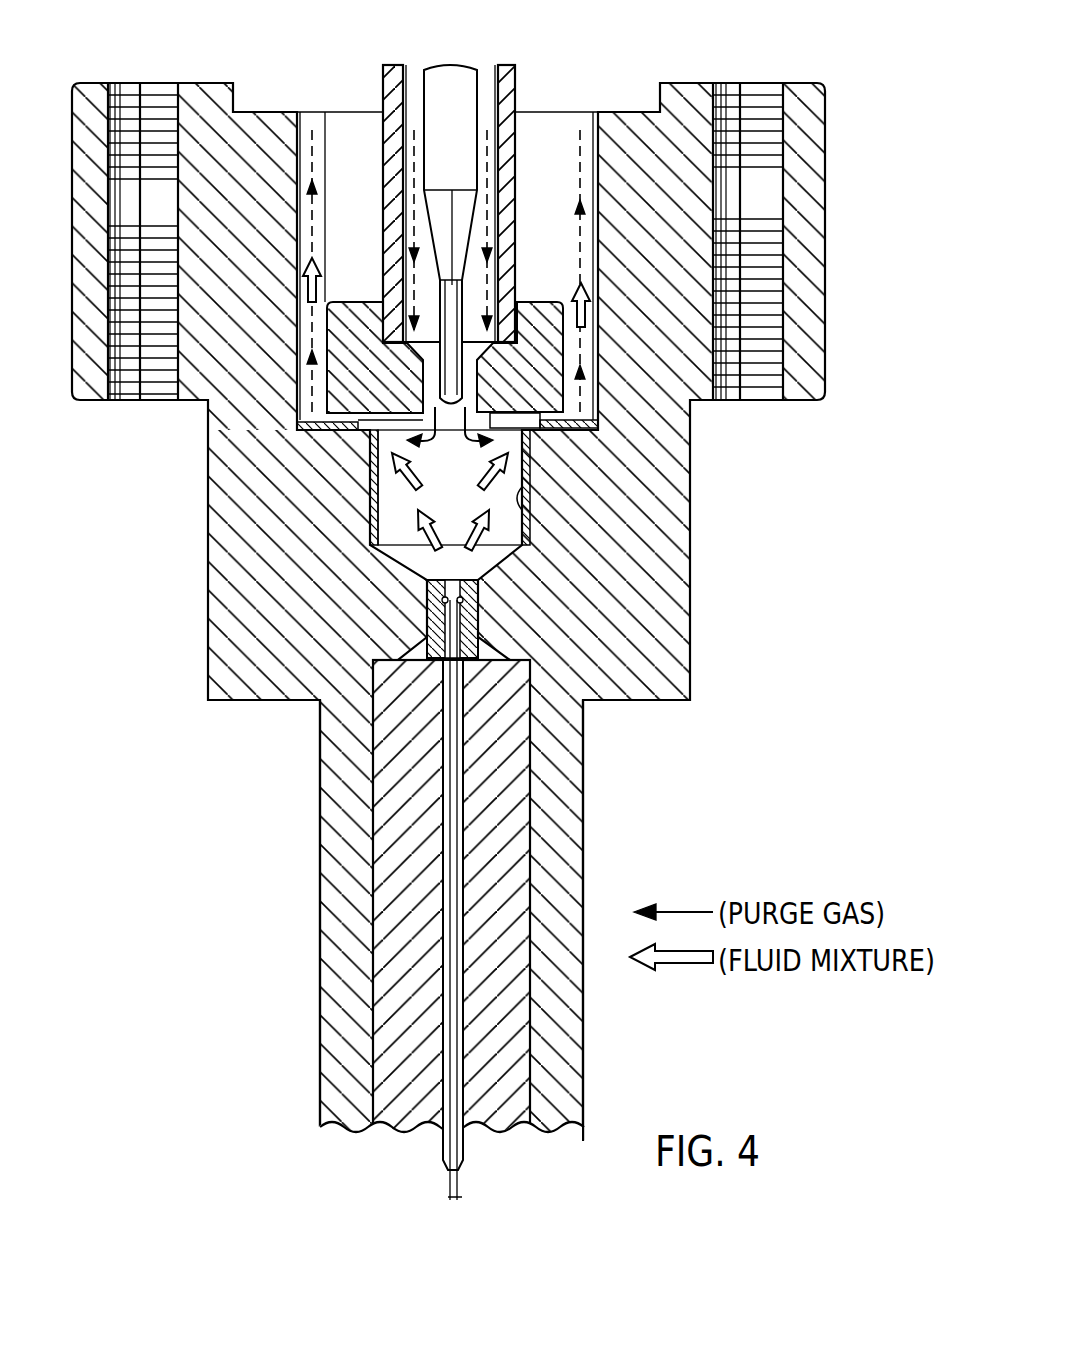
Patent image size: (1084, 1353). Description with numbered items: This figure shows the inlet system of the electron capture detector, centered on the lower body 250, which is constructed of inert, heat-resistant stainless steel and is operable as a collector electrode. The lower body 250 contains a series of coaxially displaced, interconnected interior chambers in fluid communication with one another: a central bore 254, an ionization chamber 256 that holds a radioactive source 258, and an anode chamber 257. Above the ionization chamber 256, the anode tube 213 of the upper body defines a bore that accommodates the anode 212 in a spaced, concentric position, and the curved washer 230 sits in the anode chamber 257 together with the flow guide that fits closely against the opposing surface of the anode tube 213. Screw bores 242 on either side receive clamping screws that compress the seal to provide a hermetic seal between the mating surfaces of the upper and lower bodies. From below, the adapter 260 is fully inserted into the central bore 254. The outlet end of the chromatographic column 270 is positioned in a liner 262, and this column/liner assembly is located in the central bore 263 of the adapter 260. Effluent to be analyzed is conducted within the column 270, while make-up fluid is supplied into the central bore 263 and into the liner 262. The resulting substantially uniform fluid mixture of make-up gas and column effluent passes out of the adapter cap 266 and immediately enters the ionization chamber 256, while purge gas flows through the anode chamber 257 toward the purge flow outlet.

The anode 212 is at (442, 70).
The anode tube 213 is at (516, 96).
The curved washer 230 is at (600, 432).
The screw bores 242 is at (178, 202).
The lower body 250 is at (208, 578).
The central bore 254 is at (532, 770).
The ionization chamber 256 is at (478, 502).
The anode chamber 257 is at (338, 120).
The radioactive source 258 is at (524, 478).
The adapter 260 is at (518, 872).
The liner 262 is at (466, 1147).
The central bore 263 is at (466, 1048).
The adapter cap 266 is at (478, 604).
The chromatographic column 270 is at (458, 1197).